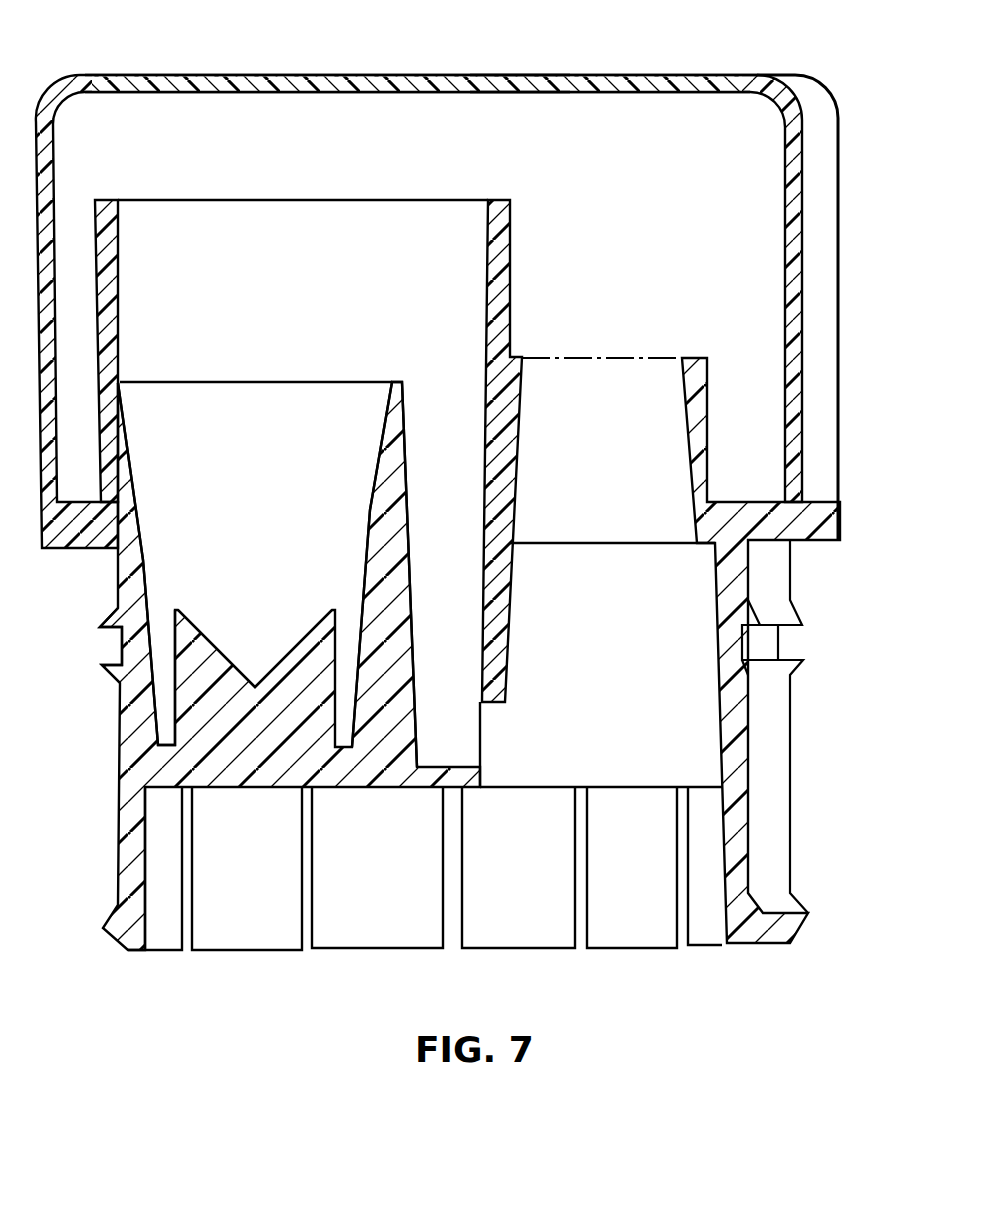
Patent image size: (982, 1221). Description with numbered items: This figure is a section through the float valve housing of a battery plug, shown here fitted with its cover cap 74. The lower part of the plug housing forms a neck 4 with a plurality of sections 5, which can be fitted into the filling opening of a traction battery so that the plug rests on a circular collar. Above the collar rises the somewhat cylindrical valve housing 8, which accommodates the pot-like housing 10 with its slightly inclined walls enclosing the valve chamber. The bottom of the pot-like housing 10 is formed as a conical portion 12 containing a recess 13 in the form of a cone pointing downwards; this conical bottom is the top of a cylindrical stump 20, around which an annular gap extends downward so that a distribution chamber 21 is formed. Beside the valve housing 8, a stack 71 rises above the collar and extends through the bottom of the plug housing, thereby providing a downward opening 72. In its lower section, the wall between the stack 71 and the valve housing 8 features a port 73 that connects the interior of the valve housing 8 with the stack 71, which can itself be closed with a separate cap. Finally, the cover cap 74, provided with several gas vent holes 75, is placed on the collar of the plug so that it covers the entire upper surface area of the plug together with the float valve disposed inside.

The neck 4 is at (770, 858).
The sections 5 is at (340, 925).
The valve housing 8 is at (505, 253).
The pot-like housing 10 is at (387, 462).
The conical portion 12 is at (307, 635).
The recess 13 is at (218, 620).
The cylindrical stump 20 is at (200, 725).
The distribution chamber 21 is at (165, 691).
The stack 71 is at (690, 356).
The downward opening 72 is at (636, 790).
The port 73 is at (480, 732).
The cover cap 74 is at (686, 80).
The gas vent holes 75 is at (558, 78).